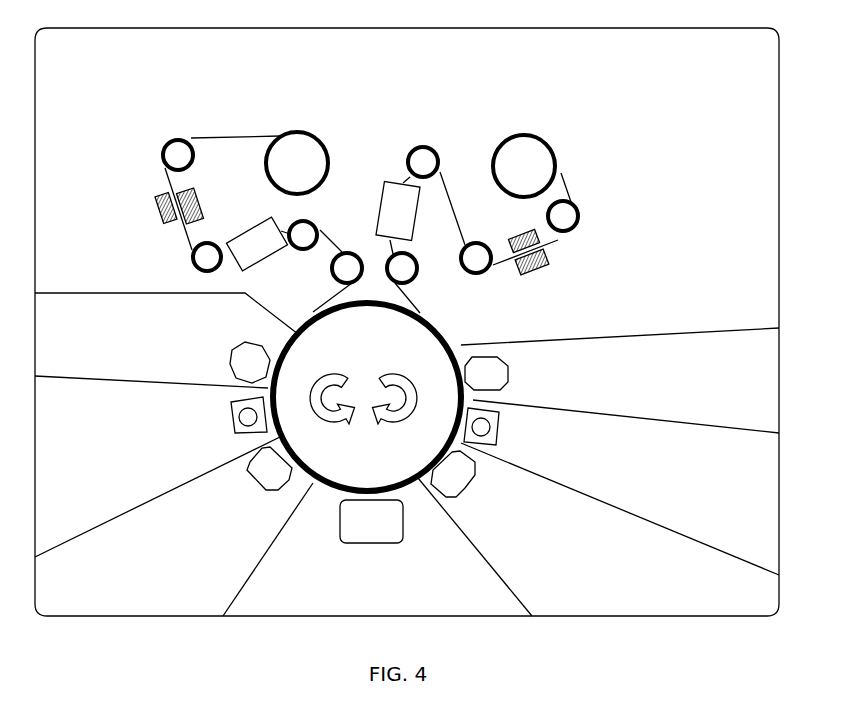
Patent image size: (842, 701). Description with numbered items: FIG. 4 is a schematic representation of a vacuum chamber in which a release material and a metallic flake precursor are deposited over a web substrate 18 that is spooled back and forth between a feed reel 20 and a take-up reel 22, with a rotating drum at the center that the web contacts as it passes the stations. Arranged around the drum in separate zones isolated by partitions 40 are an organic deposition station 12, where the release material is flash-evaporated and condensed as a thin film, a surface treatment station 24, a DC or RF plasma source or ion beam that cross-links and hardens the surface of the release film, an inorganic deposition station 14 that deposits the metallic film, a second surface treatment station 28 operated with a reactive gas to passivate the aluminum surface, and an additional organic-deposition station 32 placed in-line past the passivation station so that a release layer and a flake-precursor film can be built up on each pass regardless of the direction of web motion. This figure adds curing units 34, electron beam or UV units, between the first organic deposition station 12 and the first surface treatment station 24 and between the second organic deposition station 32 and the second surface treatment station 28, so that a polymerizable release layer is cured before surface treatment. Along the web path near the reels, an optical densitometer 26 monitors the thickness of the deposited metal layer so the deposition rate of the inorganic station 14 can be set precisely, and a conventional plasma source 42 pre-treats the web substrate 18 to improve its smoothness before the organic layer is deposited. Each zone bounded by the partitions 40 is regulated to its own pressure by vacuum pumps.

The organic deposition station 12 is at (504, 375).
The inorganic deposition station 14 is at (380, 530).
The web substrate 18 is at (227, 137).
The feed reel 20 is at (528, 156).
The take-up reel 22 is at (292, 153).
The surface treatment station 24 is at (466, 480).
The optical densitometer 26 is at (160, 221).
The second surface treatment station 28 is at (270, 465).
The additional organic-deposition station 32 is at (248, 360).
The curing unit 34 is at (235, 412).
The partitions 40 is at (56, 293).
The plasma source 42 is at (248, 236).